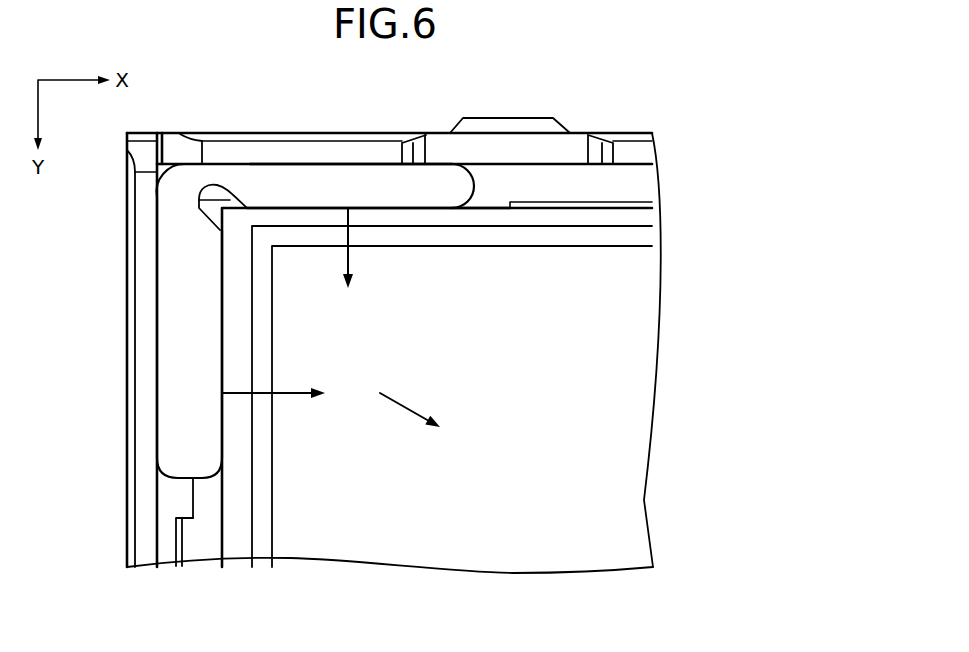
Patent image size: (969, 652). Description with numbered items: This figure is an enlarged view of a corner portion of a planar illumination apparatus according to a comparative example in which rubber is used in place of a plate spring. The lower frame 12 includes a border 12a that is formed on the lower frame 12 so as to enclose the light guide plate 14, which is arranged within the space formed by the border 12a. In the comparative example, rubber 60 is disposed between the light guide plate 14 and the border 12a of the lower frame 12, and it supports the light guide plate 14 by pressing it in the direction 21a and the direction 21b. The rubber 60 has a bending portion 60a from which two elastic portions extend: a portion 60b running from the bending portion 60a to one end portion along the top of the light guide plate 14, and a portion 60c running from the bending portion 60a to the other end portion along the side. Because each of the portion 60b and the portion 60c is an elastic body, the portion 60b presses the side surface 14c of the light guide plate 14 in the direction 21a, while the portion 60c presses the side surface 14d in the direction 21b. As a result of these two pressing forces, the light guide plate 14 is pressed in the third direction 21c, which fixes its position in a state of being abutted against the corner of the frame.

The lower frame 12 is at (557, 185).
The border 12a is at (310, 157).
The light guide plate 14 is at (407, 553).
The side surface 14c is at (488, 196).
The side surface 14d is at (210, 537).
The direction 21a is at (350, 262).
The direction 21b is at (292, 395).
The third direction 21c is at (407, 407).
The rubber 60 is at (264, 294).
The bending portion 60a is at (178, 186).
The portion 60b is at (375, 190).
The portion 60c is at (182, 398).